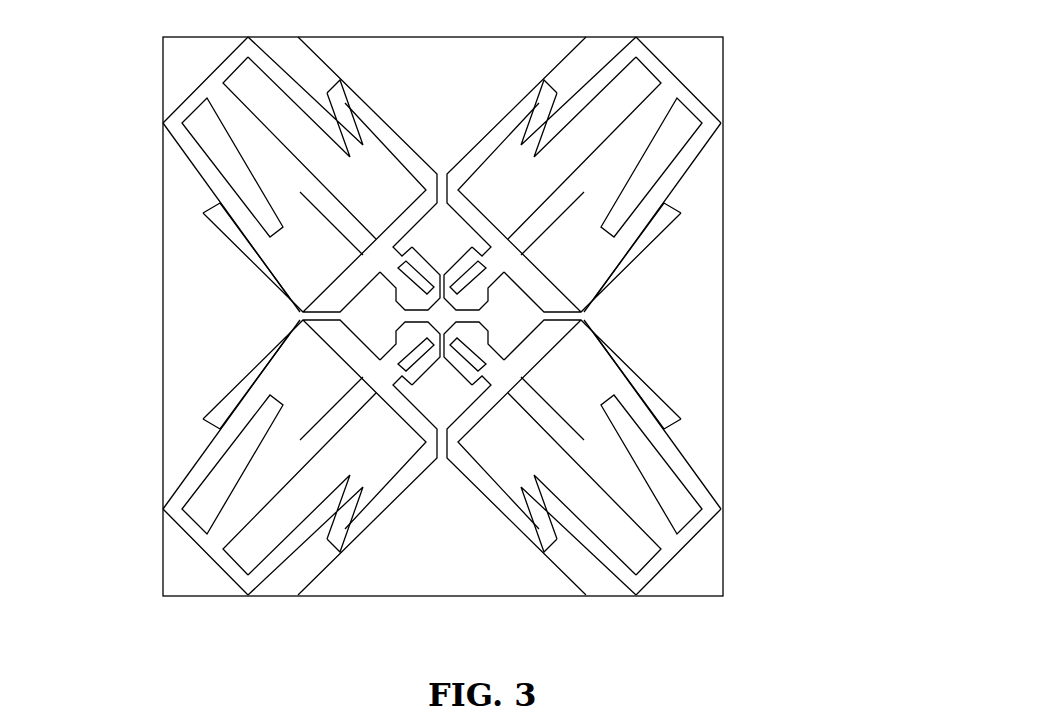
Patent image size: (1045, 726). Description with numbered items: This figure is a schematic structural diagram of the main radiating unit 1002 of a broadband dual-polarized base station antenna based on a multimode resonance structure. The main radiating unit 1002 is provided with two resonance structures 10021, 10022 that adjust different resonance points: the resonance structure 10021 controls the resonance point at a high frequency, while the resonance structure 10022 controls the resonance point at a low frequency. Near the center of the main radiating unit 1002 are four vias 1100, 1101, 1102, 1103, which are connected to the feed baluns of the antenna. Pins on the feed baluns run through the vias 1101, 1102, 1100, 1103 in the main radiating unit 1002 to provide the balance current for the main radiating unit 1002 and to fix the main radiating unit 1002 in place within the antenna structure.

The main radiating unit 1002 is at (452, 573).
The resonance structure 10021 is at (723, 126).
The resonance structure 10022 is at (645, 245).
The via 1100 is at (483, 296).
The via 1101 is at (483, 349).
The via 1102 is at (395, 297).
The via 1103 is at (395, 350).